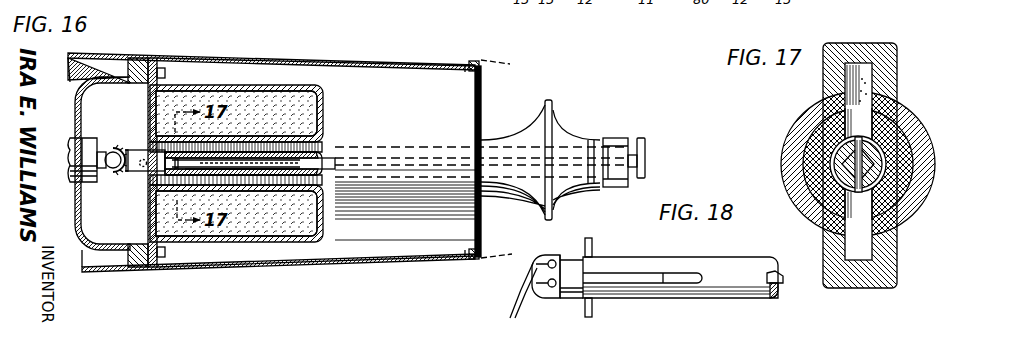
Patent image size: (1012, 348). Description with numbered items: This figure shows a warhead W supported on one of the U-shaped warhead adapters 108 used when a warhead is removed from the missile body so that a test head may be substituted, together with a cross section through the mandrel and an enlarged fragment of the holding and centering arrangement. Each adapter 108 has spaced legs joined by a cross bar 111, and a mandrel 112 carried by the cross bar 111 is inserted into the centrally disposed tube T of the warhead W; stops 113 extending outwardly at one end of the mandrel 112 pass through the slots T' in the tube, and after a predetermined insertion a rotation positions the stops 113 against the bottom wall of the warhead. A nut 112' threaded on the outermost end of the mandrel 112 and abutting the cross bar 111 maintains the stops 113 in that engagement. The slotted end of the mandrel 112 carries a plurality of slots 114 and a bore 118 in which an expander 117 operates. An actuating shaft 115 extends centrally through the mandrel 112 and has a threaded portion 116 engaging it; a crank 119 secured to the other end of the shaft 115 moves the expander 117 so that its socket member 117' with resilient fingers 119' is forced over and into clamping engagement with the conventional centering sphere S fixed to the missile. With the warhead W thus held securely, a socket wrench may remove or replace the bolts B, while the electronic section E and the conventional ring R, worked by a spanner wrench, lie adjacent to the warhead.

In FIG. 16, the electronic section E is at (92, 50).
In FIG. 16, the bolts B is at (163, 70).
In FIG. 16, the warhead W is at (253, 85).
In FIG. 17, the warhead W is at (897, 64).
In FIG. 16, the ring R is at (478, 62).
In FIG. 16, the tube T is at (251, 146).
In FIG. 17, the tube T is at (870, 164).
In FIG. 16, the slots T' is at (260, 151).
In FIG. 17, the slots T' is at (899, 143).
In FIG. 16, the centering sphere S is at (116, 152).
In FIG. 16, the warhead adapter 108 is at (548, 98).
In FIG. 16, the cross bar 111 is at (549, 126).
In FIG. 16, the mandrel 112 is at (230, 146).
In FIG. 17, the mandrel 112 is at (900, 141).
In FIG. 18, the mandrel 112 is at (680, 261).
In FIG. 16, the nut 112' is at (628, 137).
In FIG. 16, the stops 113 is at (140, 172).
In FIG. 18, the stops 113 is at (593, 249).
In FIG. 16, the slots 114 is at (183, 157).
In FIG. 17, the slots 114 is at (864, 121).
In FIG. 18, the slots 114 is at (681, 278).
In FIG. 16, the shaft 115 is at (226, 166).
In FIG. 17, the shaft 115 is at (870, 160).
In FIG. 18, the shaft 115 is at (781, 272).
In FIG. 16, the threaded portion 116 is at (276, 172).
In FIG. 16, the expander 117 is at (111, 180).
In FIG. 17, the expander 117 is at (921, 164).
In FIG. 18, the expander 117 is at (556, 295).
In FIG. 16, the socket member 117' is at (128, 134).
In FIG. 18, the socket member 117' is at (551, 300).
In FIG. 16, the bore 118 is at (223, 161).
In FIG. 17, the bore 118 is at (888, 180).
In FIG. 16, the crank 119 is at (660, 144).
In FIG. 18, the resilient fingers 119' is at (517, 297).